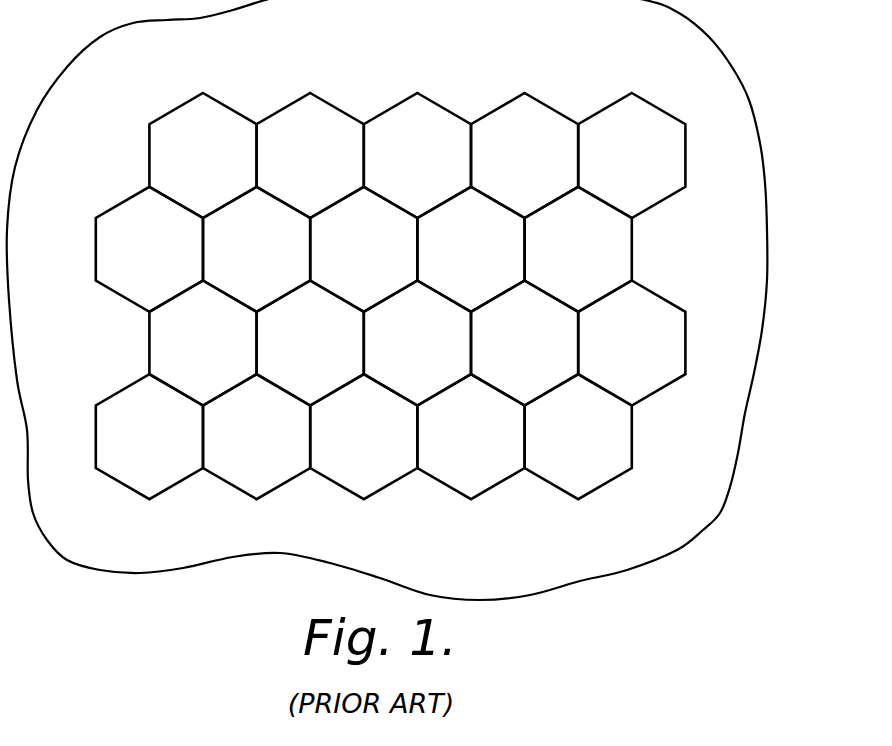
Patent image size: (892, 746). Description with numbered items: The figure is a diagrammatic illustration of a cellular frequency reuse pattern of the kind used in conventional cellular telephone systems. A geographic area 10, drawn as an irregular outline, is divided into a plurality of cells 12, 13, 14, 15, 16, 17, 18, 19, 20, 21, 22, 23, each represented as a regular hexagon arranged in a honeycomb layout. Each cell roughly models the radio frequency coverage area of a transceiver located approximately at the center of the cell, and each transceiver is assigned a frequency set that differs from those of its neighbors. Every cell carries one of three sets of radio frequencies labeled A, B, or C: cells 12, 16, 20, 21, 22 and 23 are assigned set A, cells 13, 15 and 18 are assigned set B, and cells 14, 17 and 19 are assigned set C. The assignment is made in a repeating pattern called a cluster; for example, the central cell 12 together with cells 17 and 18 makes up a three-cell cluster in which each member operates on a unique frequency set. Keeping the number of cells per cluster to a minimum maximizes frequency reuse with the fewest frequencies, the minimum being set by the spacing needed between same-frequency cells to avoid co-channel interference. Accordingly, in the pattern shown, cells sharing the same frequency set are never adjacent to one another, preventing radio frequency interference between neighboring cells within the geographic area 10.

The geographic area 10 is at (754, 373).
The cell 12 is at (417, 343).
The cell 13 is at (470, 249).
The cell 14 is at (363, 249).
The cell 15 is at (310, 343).
The cell 16 is at (256, 436).
The cell 17 is at (363, 436).
The cell 18 is at (470, 436).
The cell 19 is at (524, 343).
The cell 20 is at (578, 249).
The cell 21 is at (417, 155).
The cell 22 is at (256, 249).
The cell 23 is at (578, 436).